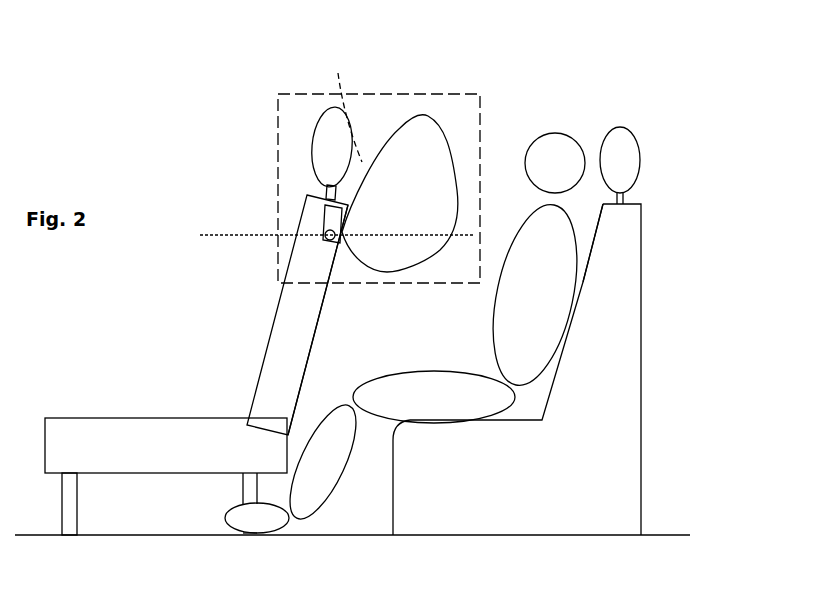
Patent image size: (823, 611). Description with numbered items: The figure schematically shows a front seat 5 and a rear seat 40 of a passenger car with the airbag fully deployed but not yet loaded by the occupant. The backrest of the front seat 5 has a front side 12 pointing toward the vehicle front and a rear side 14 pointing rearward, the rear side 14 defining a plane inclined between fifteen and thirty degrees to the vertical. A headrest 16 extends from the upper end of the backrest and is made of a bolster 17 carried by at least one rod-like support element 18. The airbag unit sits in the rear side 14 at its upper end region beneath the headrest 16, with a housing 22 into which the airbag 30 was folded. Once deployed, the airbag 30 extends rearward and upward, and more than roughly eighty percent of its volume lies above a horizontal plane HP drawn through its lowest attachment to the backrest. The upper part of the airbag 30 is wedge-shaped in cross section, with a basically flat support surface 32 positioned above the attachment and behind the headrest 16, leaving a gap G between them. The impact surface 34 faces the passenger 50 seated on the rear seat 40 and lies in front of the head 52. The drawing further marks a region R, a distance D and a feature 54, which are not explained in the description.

The front seat 5 is at (70, 432).
The front side 12 is at (262, 367).
The rear side 14 is at (313, 350).
The headrest 16 is at (337, 148).
The bolster 17 is at (325, 118).
The support element 18 is at (328, 190).
The housing 22 is at (327, 222).
The airbag 30 is at (437, 130).
The support surface 32 is at (387, 133).
The impact surface 34 is at (462, 162).
The rear seat 40 is at (615, 360).
The passenger 50 is at (457, 408).
The head 52 is at (558, 163).
The seat back 54 is at (583, 282).
The region R is at (421, 66).
The gap G is at (338, 108).
The horizontal plane HP is at (233, 233).
The distance D is at (277, 252).